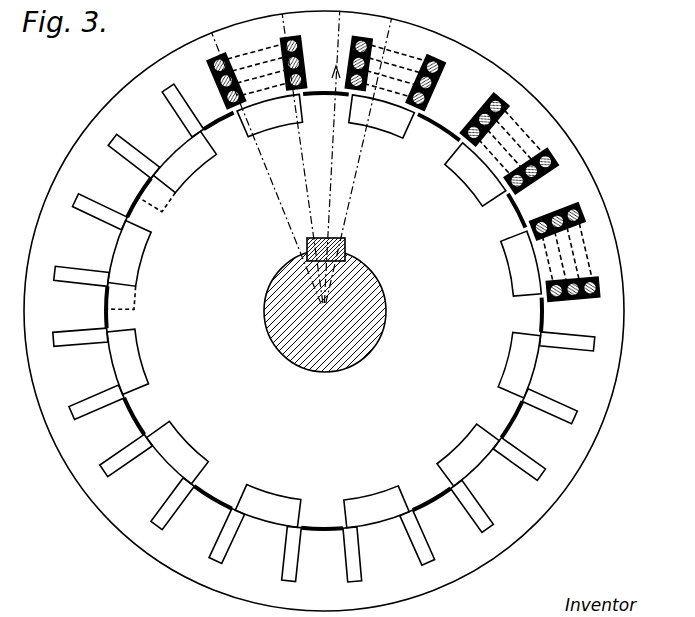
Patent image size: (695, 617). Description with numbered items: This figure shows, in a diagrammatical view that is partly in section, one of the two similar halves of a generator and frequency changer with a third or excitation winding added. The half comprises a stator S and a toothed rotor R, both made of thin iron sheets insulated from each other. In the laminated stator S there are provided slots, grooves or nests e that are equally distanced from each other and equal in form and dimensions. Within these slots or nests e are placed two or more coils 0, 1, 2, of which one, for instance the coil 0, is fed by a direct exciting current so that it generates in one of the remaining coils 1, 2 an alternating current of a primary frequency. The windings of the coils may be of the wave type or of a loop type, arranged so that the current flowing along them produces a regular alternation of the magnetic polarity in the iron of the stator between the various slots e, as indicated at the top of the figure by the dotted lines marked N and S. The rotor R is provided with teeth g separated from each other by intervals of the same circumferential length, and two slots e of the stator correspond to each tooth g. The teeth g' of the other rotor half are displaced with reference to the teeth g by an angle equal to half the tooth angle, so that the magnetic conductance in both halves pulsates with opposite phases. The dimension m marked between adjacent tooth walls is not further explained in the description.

The slots, grooves or nests e is at (73, 198).
The teeth g is at (146, 227).
The teeth of the other rotor half g' is at (137, 293).
The coil 0 is at (224, 102).
The coil 1 is at (225, 86).
The coil 2 is at (219, 68).
The slot width m is at (274, 556).
The toothed rotor R is at (350, 309).
The stator S is at (585, 445).
The magnetic polarity N (north) N is at (329, 157).